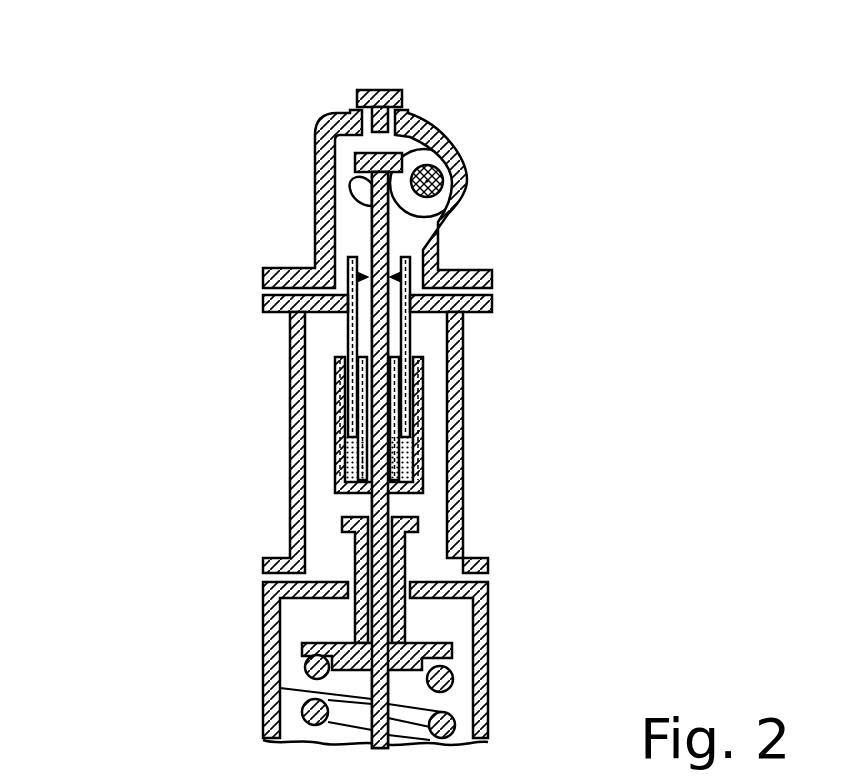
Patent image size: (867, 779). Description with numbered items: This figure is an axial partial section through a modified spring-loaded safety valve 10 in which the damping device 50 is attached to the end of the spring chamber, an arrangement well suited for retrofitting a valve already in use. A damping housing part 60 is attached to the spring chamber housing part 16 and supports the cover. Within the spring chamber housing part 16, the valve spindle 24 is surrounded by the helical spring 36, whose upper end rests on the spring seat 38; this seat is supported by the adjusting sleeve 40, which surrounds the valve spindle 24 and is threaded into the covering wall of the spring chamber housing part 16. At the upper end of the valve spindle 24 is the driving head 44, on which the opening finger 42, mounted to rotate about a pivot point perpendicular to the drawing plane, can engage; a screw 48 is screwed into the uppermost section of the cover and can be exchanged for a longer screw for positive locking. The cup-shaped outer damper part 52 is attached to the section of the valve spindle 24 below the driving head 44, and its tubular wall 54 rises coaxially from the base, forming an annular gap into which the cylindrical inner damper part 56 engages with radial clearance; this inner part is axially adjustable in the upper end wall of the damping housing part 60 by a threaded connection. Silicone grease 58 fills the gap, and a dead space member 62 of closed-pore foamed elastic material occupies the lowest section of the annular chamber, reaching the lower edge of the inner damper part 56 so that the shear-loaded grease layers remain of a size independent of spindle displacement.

The spring-loaded safety valve 10 is at (615, 182).
The spring chamber housing part 16 is at (272, 663).
The valve spindle 24 is at (378, 697).
The helical spring 36 is at (448, 673).
The spring seat 38 is at (432, 647).
The adjusting sleeve 40 is at (402, 553).
The opening finger 42 is at (433, 223).
The driving head 44 is at (437, 137).
The screw 48 is at (377, 88).
The damping device 50 is at (320, 393).
The cup-shaped outer damper part 52 is at (440, 410).
The tubular wall 54 is at (412, 382).
The inner damper part 56 is at (425, 338).
The silicone grease 58 is at (340, 420).
The damping housing part 60 is at (297, 483).
The dead space member 62 is at (423, 463).